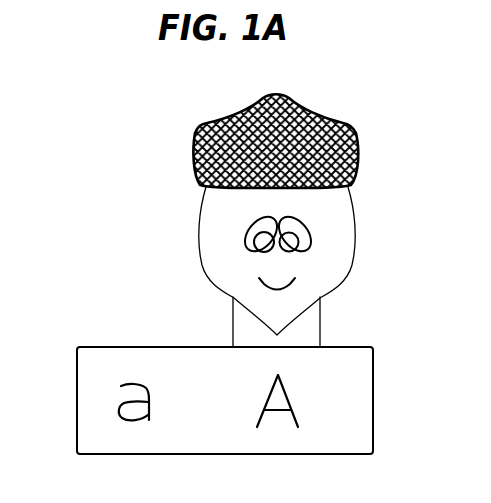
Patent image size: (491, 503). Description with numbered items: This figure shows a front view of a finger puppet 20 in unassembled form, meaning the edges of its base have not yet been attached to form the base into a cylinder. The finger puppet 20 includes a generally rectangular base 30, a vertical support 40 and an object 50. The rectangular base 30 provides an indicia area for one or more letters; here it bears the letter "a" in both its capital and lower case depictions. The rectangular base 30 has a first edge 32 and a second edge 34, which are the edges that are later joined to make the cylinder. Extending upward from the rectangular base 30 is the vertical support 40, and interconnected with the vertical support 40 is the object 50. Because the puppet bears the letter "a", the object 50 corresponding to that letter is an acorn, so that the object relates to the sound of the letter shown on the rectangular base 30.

The finger puppet 20 is at (248, 274).
The rectangular base 30 is at (239, 392).
The first edge 32 is at (373, 420).
The second edge 34 is at (77, 373).
The vertical support 40 is at (323, 312).
The object 50 is at (196, 221).